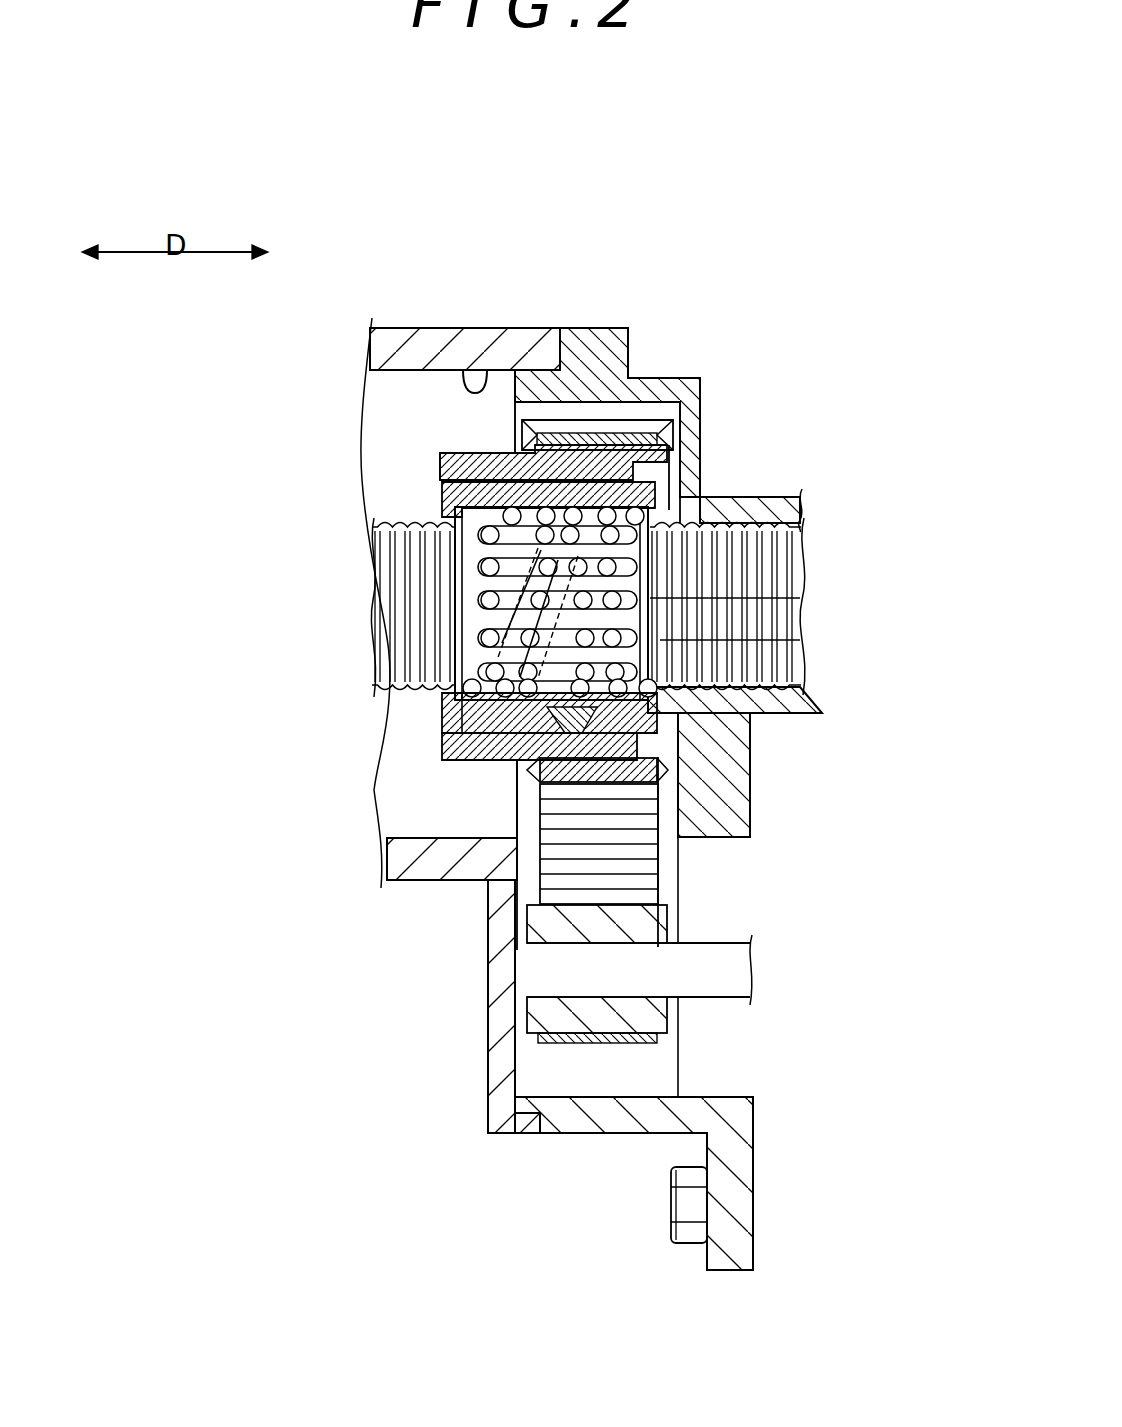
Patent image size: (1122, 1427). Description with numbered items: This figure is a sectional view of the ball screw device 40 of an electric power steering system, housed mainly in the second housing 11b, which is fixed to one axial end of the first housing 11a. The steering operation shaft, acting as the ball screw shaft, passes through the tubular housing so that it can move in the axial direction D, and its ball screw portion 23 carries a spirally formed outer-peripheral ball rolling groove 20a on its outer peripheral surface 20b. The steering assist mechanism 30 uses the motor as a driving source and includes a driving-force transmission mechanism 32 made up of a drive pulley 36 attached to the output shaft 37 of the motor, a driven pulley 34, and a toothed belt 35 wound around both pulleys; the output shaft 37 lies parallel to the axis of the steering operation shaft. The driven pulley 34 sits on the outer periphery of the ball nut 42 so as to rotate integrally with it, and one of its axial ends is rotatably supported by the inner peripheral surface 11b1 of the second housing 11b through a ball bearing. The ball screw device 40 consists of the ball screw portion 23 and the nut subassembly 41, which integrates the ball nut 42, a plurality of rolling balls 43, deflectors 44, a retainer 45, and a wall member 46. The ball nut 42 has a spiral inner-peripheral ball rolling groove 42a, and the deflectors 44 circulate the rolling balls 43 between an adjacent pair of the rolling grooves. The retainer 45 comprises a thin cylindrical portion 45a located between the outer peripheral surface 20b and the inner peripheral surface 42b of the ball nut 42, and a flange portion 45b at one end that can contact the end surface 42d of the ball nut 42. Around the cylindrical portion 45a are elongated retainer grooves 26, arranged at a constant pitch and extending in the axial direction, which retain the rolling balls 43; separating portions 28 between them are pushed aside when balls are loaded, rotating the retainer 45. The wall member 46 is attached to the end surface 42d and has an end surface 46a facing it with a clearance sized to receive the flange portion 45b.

The first housing 11a is at (779, 500).
The second housing 11b is at (420, 357).
The inner peripheral surface 11b1 is at (497, 372).
The outer-peripheral ball rolling groove 20a is at (702, 493).
The outer peripheral surface 20b is at (750, 720).
The ball screw portion 23 is at (752, 512).
The retainer grooves 26 is at (800, 598).
The separating portions 28 is at (800, 640).
The steering assist mechanism 30 is at (538, 1062).
The driving-force transmission mechanism 32 is at (516, 921).
The driven pulley 34 is at (603, 427).
The toothed belt 35 is at (560, 868).
The drive pulley 36 is at (600, 1040).
The output shaft 37 is at (740, 925).
The ball screw device 40 is at (410, 392).
The nut subassembly 41 is at (510, 773).
The ball nut 42 is at (545, 473).
The inner-peripheral ball rolling groove 42a is at (682, 440).
The inner peripheral surface 42b is at (738, 792).
The end surface 42d is at (440, 503).
The rolling balls 43 is at (437, 740).
The deflectors 44 is at (490, 453).
The retainer 45 is at (440, 568).
The cylindrical portion 45a is at (478, 630).
The flange portion 45b is at (458, 693).
The wall member 46 is at (440, 483).
The end surface 46a is at (457, 558).